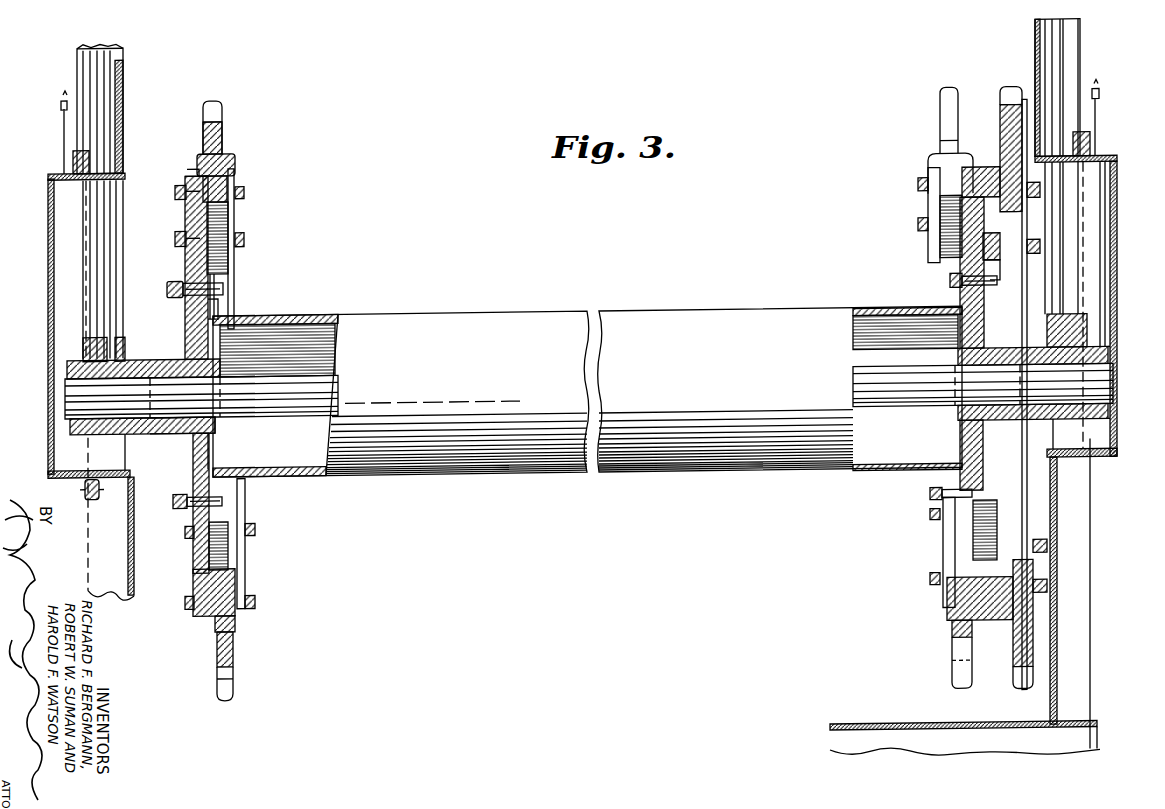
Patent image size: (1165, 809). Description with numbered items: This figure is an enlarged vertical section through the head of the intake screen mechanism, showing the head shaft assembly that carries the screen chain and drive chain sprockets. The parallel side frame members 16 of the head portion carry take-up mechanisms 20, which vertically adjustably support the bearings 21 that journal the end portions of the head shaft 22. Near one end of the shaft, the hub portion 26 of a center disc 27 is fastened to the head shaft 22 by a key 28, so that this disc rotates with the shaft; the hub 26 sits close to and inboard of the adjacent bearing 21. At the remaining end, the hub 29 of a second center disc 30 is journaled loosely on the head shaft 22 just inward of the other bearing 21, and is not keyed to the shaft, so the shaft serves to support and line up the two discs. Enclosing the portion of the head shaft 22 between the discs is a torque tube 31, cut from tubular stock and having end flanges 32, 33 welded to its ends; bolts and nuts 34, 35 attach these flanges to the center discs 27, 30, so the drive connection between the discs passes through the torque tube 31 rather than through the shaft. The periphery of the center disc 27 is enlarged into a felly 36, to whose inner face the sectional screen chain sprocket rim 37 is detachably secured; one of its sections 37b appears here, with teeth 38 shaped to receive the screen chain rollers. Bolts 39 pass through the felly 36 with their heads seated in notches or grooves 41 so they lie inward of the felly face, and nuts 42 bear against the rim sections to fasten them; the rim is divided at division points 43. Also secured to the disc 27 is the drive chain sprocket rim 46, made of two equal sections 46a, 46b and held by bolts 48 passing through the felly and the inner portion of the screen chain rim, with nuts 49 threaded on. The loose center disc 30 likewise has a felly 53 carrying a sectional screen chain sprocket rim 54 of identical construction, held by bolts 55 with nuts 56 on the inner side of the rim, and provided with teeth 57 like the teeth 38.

The side frame member 16 is at (135, 594).
The take-up mechanism 20 is at (113, 203).
The bearing 21 is at (137, 440).
The head shaft 22 is at (280, 422).
The hub portion 26 is at (958, 358).
The center disc 27 is at (967, 262).
The key 28 is at (1015, 380).
The hub 29 is at (222, 432).
The second center disc 30 is at (188, 330).
The torque tube 31 is at (660, 311).
The end flange 32 is at (955, 262).
The end flange 33 is at (230, 275).
The bolt 34 is at (950, 283).
The nut 35 is at (225, 287).
The felly 36 is at (983, 165).
The screen chain sprocket rim 37 is at (936, 134).
The rim section 37b is at (950, 624).
The tooth 38 is at (952, 675).
The bolt 39 is at (928, 522).
The notch or groove 41 is at (1000, 505).
The nut 42 is at (930, 508).
The division point 43 is at (930, 173).
The drive chain sprocket rim 46 is at (997, 104).
The rim section 46a is at (1027, 105).
The rim section 46b is at (1018, 672).
The bolt 48 is at (1040, 212).
The nut 49 is at (1034, 190).
The felly 53 is at (195, 176).
The screen chain sprocket rim 54 is at (234, 165).
The bolt 55 is at (178, 195).
The nut 56 is at (238, 208).
The tooth 57 is at (225, 110).